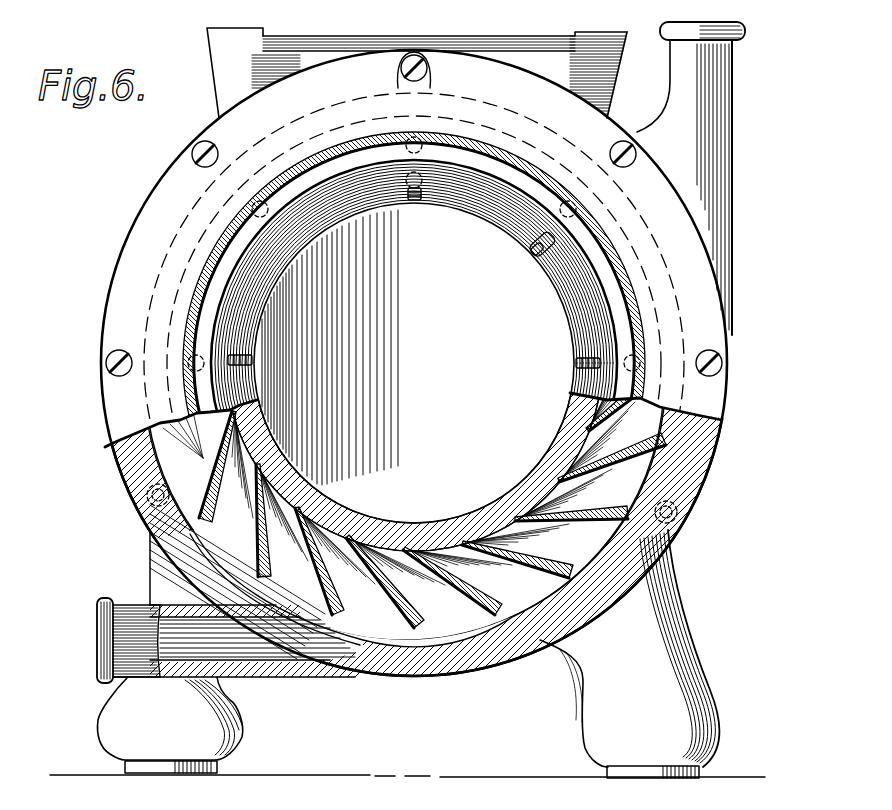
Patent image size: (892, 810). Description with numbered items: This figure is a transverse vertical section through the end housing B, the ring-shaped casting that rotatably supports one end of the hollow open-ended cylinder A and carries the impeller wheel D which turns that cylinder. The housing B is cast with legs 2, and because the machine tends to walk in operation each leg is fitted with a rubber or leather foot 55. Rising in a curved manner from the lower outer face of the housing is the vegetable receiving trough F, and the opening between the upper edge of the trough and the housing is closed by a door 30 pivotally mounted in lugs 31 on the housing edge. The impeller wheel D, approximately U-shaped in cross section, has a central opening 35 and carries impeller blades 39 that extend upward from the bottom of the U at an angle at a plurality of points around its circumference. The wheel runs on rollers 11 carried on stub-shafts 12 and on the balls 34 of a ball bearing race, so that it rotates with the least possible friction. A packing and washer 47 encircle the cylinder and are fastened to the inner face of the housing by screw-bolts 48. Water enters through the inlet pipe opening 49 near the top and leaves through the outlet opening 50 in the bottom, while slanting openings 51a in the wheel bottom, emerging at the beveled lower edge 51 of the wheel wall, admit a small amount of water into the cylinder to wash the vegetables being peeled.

The legs 2 is at (409, 648).
The rollers 11 is at (165, 512).
The stub-shafts 12 is at (148, 496).
The door 30 is at (388, 32).
The lugs 31 is at (233, 30).
The balls 34 is at (580, 214).
The central opening 35 is at (414, 363).
The impeller blades 39 is at (334, 620).
The washer 47 is at (710, 333).
The screw-bolts 48 is at (200, 148).
The water inlet pipe opening 49 is at (691, 178).
The water-outlet opening 50 is at (105, 647).
The beveled lower edge 51 is at (243, 319).
The openings 51a is at (408, 200).
The feet 55 is at (217, 768).
The hollow open ended cylinder A is at (225, 272).
The end housing B is at (146, 213).
The impeller-wheel D is at (280, 456).
The vegetable receiving box or trough F is at (428, 75).